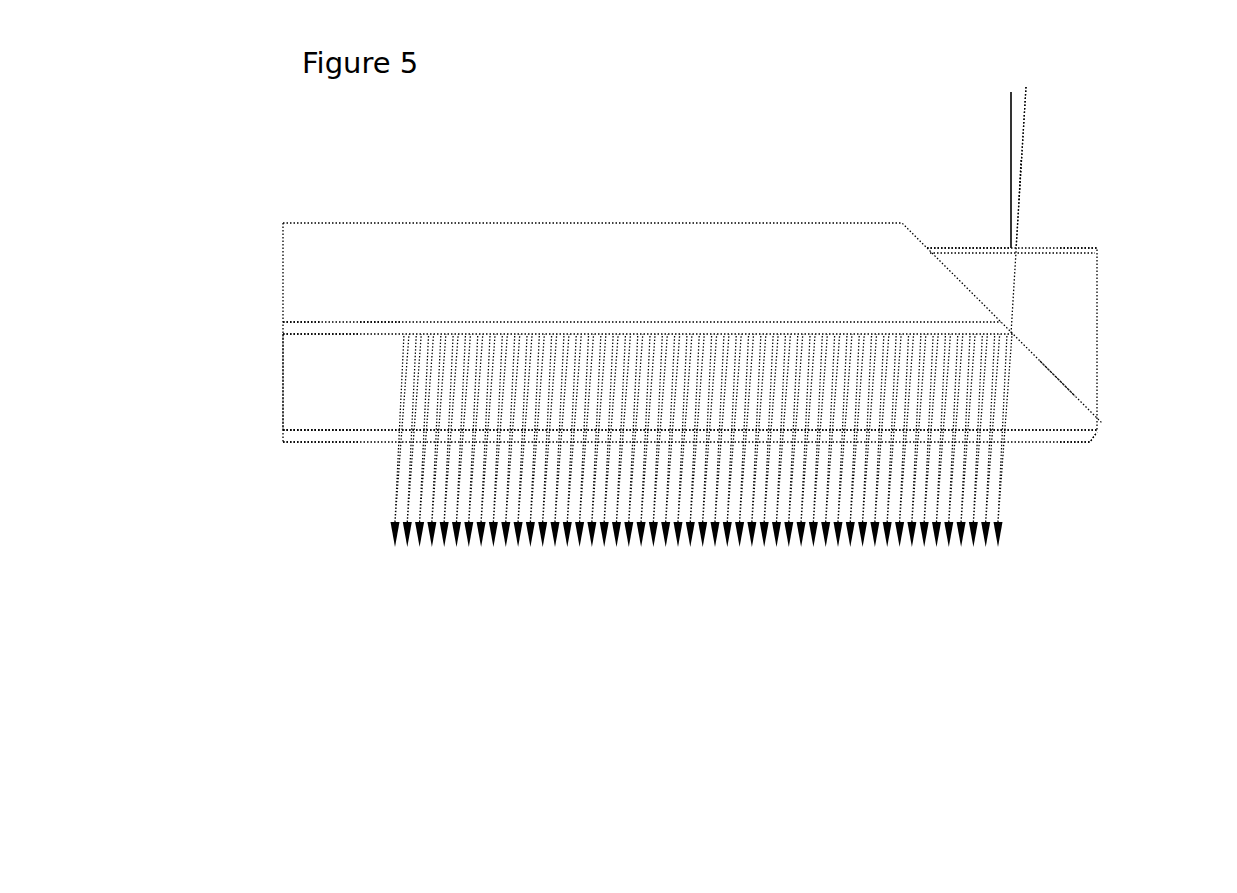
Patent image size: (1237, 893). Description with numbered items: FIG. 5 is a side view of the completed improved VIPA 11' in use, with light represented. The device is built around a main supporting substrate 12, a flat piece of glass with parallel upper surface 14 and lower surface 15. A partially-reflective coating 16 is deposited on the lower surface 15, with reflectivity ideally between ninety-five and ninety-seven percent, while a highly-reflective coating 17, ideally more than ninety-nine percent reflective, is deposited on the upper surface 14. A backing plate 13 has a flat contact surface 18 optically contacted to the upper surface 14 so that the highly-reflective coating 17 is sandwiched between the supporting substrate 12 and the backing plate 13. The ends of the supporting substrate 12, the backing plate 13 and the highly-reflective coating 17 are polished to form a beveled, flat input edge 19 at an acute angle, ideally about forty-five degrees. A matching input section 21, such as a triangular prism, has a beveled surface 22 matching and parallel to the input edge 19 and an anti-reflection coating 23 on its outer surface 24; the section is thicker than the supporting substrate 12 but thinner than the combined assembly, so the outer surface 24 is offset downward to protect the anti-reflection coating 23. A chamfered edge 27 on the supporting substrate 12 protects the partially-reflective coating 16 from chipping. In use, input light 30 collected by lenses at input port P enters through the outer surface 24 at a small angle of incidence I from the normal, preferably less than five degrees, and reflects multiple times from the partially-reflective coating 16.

The improved VIPA 11' is at (692, 266).
The main supporting substrate 12 is at (351, 404).
The backing plate 13 is at (604, 296).
The upper surface 14 is at (335, 339).
The lower surface 15 is at (321, 428).
The partially-reflective coating 16 is at (318, 441).
The highly-reflective coating 17 is at (287, 323).
The contact surface 18 is at (377, 317).
The input edge 19 is at (1037, 370).
The matching input section 21 is at (1049, 329).
The beveled surface 22 is at (1063, 383).
The anti-reflection coating 23 is at (957, 247).
The outer surface 24 is at (1067, 259).
The chamfered edge 27 is at (1098, 437).
The input light 30 is at (1021, 164).
The angle of incidence I is at (1017, 85).
The input port P is at (1031, 101).